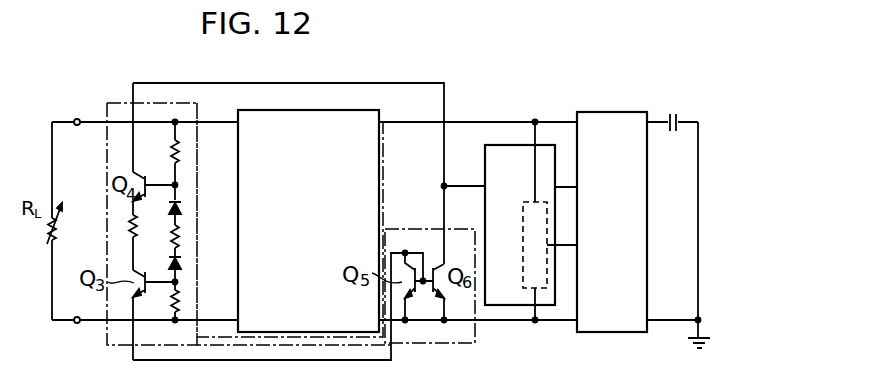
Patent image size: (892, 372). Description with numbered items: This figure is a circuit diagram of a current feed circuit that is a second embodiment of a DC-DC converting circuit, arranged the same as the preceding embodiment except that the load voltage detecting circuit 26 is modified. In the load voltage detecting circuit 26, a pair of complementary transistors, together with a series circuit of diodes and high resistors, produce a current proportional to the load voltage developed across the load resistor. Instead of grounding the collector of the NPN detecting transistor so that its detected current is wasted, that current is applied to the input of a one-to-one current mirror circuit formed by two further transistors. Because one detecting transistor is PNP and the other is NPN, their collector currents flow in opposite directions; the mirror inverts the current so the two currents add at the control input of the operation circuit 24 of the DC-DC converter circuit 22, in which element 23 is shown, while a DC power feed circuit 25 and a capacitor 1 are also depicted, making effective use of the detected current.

The capacitor 1 is at (670, 113).
The DC-DC converter circuit 22 is at (597, 112).
The resistor (dashed) 23 is at (523, 240).
The operation circuit 24 is at (531, 72).
The DC power feed circuit 25 is at (358, 43).
The load voltage detecting circuit 26 is at (122, 50).